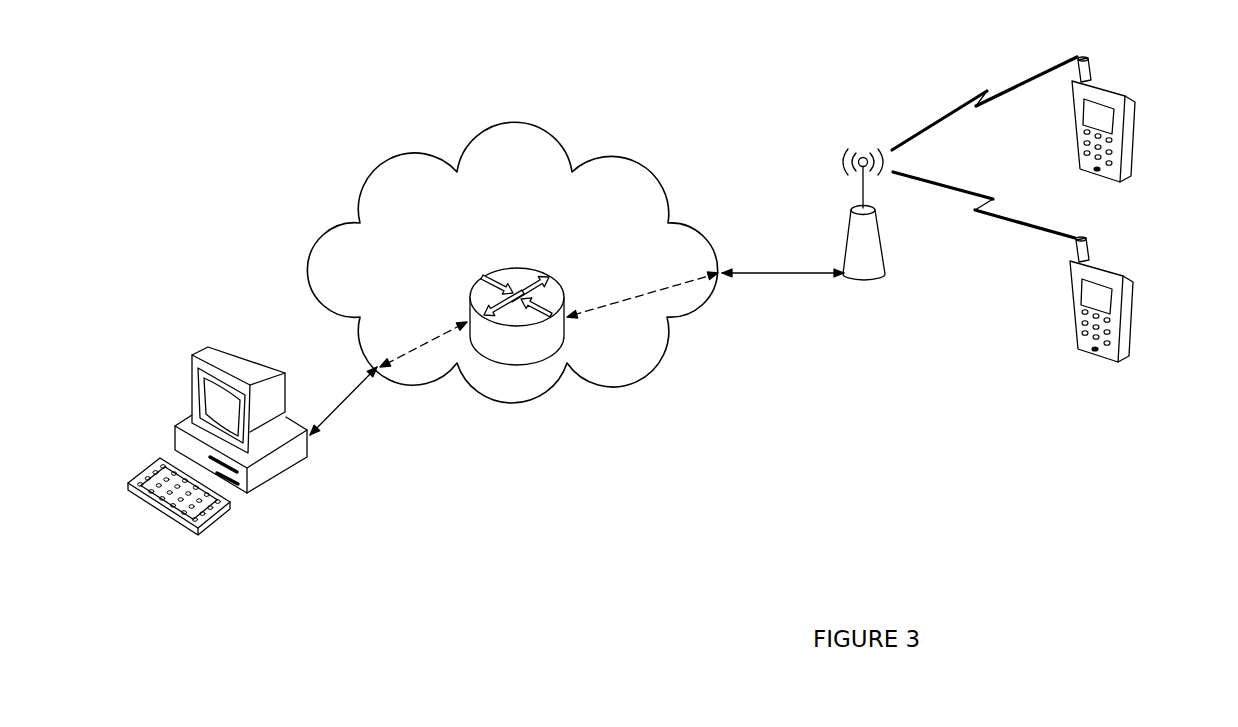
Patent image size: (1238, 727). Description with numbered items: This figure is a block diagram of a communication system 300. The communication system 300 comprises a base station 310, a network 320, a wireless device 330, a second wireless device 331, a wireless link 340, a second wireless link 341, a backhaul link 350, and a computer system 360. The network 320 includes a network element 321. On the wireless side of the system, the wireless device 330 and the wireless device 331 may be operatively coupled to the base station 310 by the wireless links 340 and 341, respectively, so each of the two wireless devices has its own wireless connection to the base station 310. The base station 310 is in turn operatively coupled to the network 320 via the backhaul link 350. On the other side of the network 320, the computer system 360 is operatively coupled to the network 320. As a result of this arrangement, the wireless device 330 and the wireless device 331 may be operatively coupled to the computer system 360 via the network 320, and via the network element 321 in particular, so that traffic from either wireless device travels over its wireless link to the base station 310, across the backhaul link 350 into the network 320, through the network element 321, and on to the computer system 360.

The communication system 300 is at (259, 69).
The base station 310 is at (877, 281).
The network 320 is at (512, 262).
The network element 321 is at (541, 272).
The wireless device 330 is at (1119, 182).
The wireless device 331 is at (1117, 362).
The wireless link 340 is at (978, 108).
The wireless link 341 is at (978, 193).
The backhaul link 350 is at (801, 273).
The computer system 360 is at (258, 356).